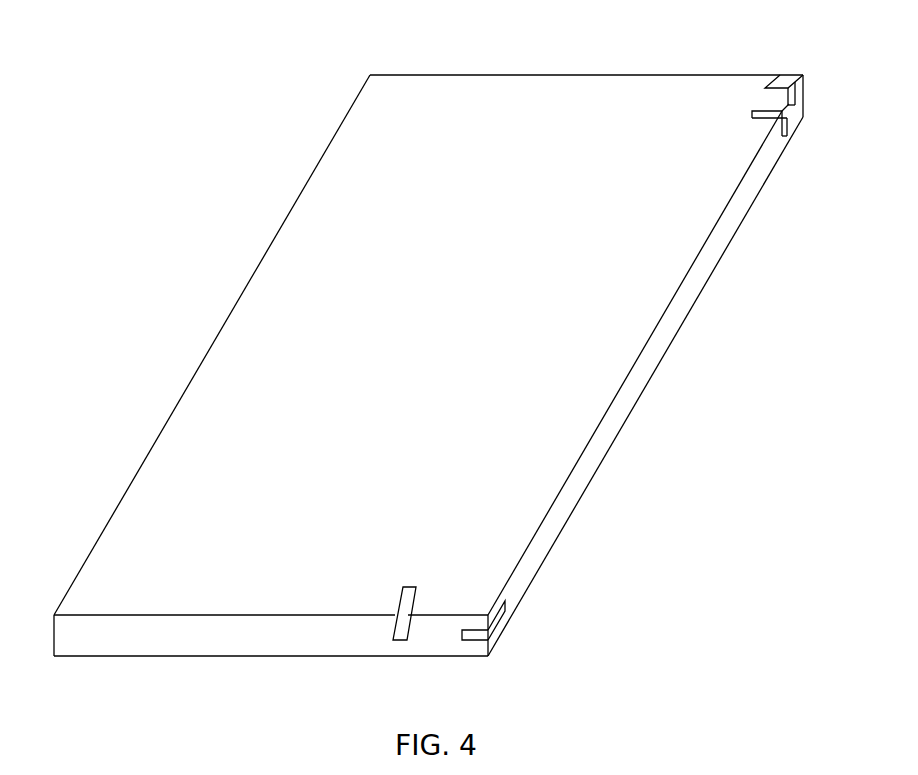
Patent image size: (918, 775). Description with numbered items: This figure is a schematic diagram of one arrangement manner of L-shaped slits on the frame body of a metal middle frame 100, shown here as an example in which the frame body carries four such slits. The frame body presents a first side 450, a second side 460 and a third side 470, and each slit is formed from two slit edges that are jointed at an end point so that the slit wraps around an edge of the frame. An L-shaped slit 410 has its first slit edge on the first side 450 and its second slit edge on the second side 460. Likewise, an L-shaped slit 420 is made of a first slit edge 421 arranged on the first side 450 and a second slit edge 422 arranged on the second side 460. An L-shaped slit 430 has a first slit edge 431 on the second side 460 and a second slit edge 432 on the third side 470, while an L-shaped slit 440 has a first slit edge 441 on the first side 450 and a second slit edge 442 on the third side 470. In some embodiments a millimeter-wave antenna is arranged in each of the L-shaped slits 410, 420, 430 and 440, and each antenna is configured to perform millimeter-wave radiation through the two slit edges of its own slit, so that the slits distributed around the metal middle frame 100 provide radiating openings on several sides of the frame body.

The metal middle frame 100 is at (430, 45).
The L-shaped slit 410 is at (824, 98).
The L-shaped slit 420 is at (753, 115).
The first slit edge 421 is at (760, 116).
The second slit edge 422 is at (786, 123).
The L-shaped slit 430 is at (498, 622).
The first slit edge 431 is at (499, 621).
The second slit edge 432 is at (472, 640).
The L-shaped slit 440 is at (404, 587).
The first slit edge 441 is at (415, 585).
The second slit edge 442 is at (403, 640).
The first side 450 is at (427, 111).
The second side 460 is at (618, 413).
The third side 470 is at (293, 652).